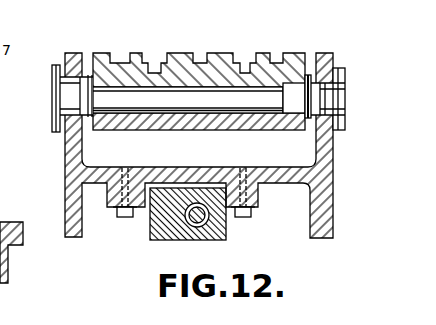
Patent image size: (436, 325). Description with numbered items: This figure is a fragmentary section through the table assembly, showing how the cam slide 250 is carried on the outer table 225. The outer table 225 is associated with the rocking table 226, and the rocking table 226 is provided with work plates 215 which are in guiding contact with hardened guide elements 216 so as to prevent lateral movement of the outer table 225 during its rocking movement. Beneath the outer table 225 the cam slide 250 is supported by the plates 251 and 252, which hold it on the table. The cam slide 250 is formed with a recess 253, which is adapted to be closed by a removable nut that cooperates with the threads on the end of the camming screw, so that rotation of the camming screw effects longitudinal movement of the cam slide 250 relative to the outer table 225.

The work plate 215 is at (308, 75).
The hardened guide element 216 is at (325, 90).
The outer table 225 is at (72, 175).
The rocking table 226 is at (135, 58).
The cam slide 250 is at (152, 240).
The plate 251 is at (146, 208).
The plate 252 is at (258, 210).
The recess 253 is at (209, 224).